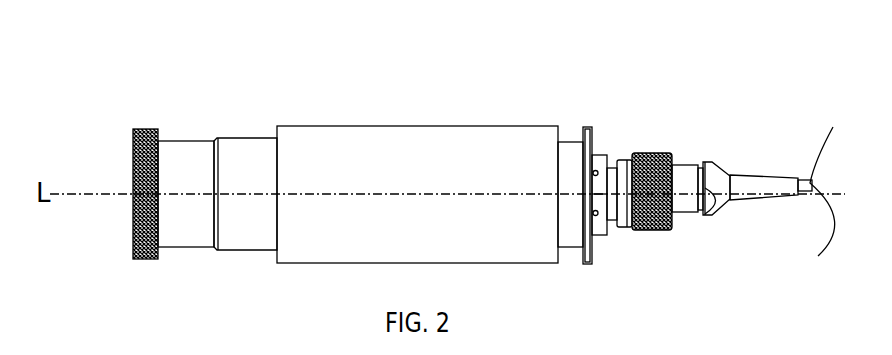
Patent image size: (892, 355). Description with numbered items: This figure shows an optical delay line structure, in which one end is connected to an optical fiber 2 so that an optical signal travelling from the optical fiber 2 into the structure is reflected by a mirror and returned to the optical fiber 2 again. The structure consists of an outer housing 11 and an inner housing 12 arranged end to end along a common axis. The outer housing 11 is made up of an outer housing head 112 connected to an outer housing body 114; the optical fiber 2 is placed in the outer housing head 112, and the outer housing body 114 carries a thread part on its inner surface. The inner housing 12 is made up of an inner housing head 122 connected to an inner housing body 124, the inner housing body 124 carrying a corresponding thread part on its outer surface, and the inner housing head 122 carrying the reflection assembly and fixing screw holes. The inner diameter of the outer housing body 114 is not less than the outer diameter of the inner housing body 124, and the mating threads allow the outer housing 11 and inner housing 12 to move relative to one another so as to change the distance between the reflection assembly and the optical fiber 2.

The optical fiber 2 is at (809, 178).
The outer housing 11 is at (582, 42).
The outer housing head 112 is at (579, 152).
The outer housing body 114 is at (537, 153).
The inner housing 12 is at (277, 42).
The inner housing head 122 is at (183, 160).
The inner housing body 124 is at (238, 158).